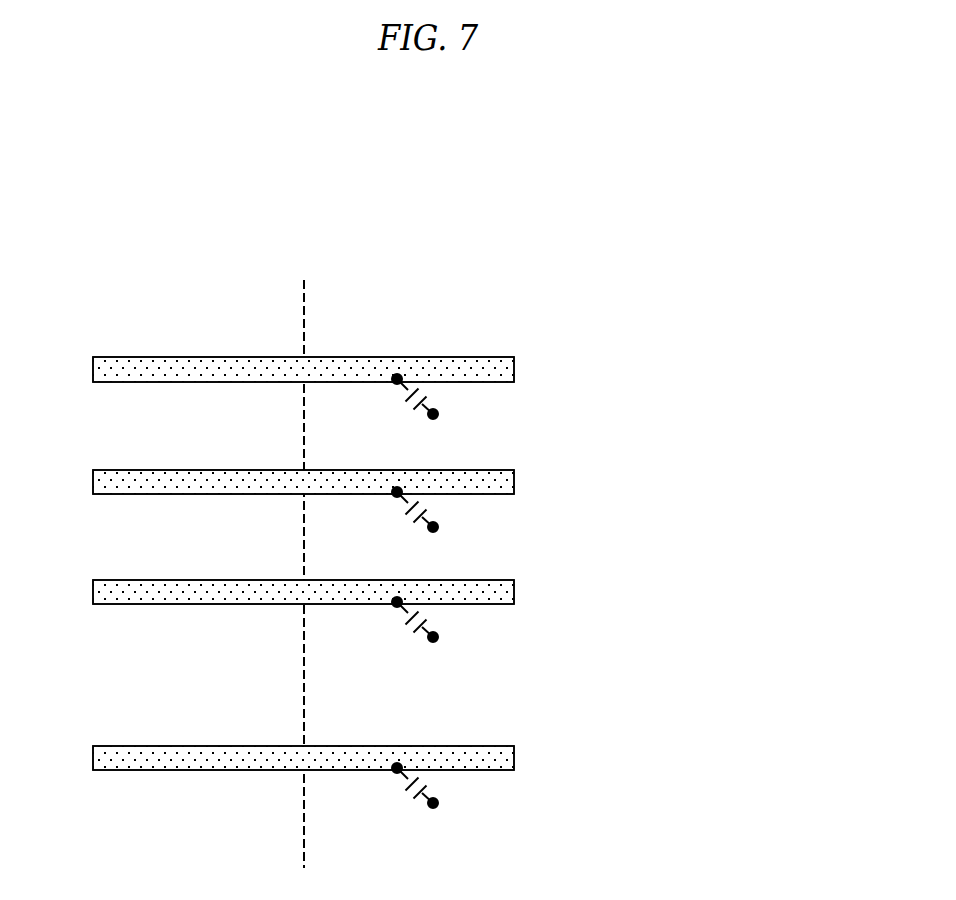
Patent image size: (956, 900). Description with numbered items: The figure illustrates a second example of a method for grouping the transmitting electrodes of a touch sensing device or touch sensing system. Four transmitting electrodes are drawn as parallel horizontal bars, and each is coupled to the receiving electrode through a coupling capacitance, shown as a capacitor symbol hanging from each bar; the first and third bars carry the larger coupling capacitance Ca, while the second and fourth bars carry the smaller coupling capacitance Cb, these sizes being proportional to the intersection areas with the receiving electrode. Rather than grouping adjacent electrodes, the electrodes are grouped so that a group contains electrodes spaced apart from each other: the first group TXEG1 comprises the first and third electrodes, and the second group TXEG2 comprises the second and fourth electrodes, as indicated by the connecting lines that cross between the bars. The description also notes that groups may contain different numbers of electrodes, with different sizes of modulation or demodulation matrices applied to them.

The coupling capacitance Ca is at (405, 511).
The coupling capacitance Cb is at (405, 652).
The first group TXEG1 is at (615, 568).
The second group TXEG2 is at (615, 503).